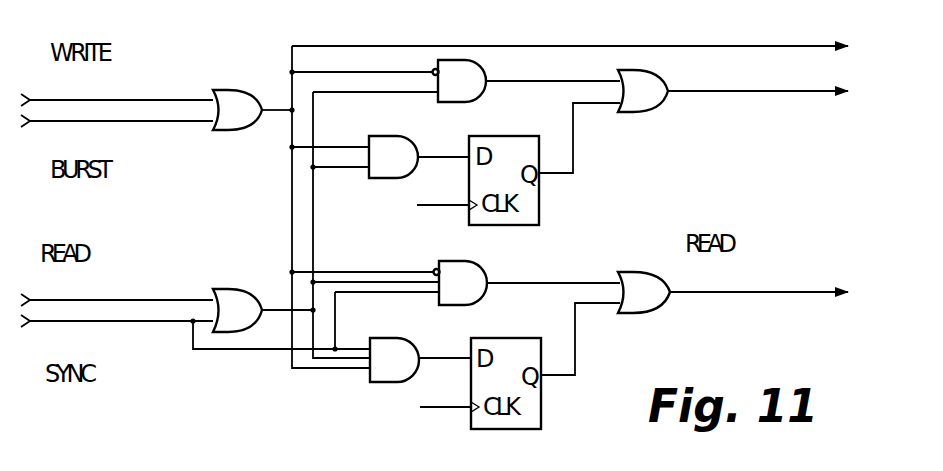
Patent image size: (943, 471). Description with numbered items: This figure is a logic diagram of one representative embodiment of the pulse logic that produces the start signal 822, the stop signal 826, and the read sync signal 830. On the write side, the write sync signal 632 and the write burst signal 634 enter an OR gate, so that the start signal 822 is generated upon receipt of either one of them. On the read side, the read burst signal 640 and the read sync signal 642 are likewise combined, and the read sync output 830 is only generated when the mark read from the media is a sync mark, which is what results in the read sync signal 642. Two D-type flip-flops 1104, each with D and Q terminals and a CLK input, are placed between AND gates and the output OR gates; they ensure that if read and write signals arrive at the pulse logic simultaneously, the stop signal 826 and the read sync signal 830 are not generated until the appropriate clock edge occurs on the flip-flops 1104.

The write sync signal 632 is at (180, 99).
The write burst signal 634 is at (181, 124).
The read burst signal 640 is at (163, 298).
The read sync signal 642 is at (192, 335).
The start signal 822 is at (804, 44).
The stop signal 826 is at (804, 89).
The read sync signal 830 is at (805, 290).
The flip-flops 1104 is at (497, 136).